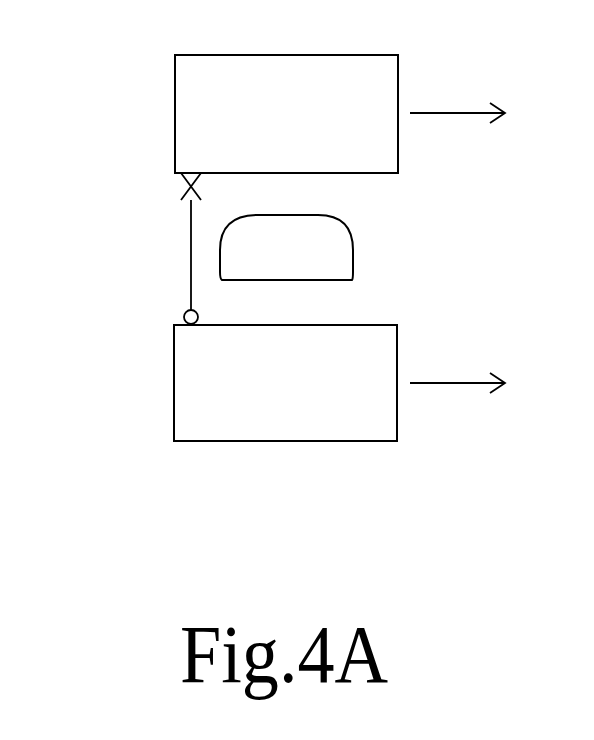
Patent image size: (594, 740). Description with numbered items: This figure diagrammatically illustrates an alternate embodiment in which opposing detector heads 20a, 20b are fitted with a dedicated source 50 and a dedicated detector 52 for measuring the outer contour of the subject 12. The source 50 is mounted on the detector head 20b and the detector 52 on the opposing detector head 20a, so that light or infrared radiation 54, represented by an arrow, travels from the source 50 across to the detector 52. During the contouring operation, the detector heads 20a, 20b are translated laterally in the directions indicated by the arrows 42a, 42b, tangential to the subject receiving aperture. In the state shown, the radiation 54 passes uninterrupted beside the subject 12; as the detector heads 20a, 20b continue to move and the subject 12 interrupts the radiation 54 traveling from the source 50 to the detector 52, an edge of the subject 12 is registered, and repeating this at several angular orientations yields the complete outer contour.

The detector head 20a is at (311, 130).
The detector head 20b is at (311, 397).
The subject 12 is at (300, 265).
The arrow 42a is at (450, 113).
The arrow 42b is at (450, 383).
The detector 52 is at (183, 176).
The radiation 54 is at (190, 248).
The source 50 is at (184, 316).